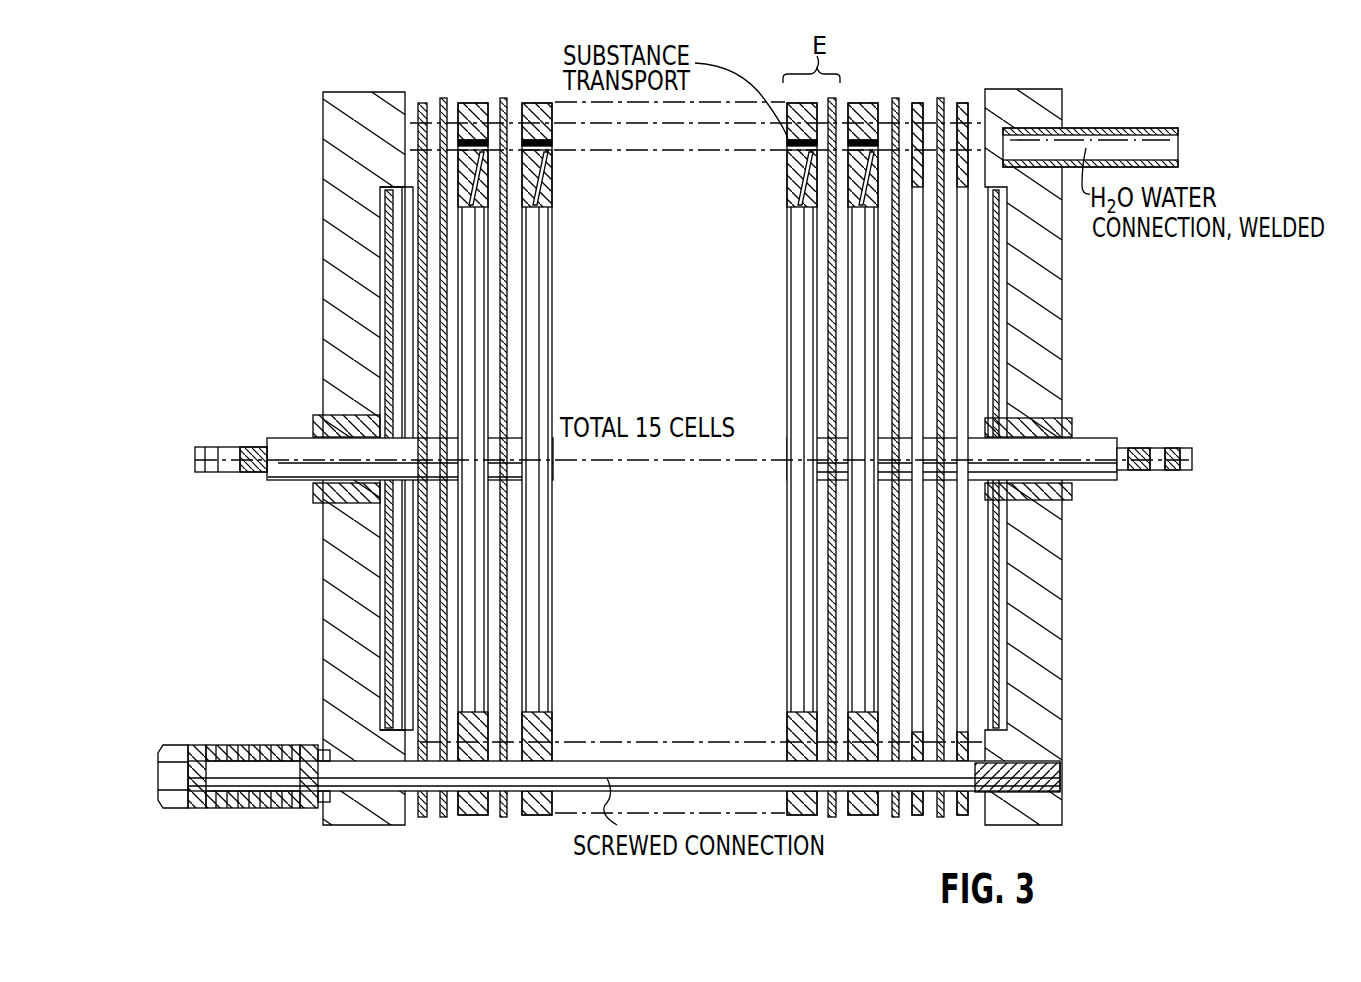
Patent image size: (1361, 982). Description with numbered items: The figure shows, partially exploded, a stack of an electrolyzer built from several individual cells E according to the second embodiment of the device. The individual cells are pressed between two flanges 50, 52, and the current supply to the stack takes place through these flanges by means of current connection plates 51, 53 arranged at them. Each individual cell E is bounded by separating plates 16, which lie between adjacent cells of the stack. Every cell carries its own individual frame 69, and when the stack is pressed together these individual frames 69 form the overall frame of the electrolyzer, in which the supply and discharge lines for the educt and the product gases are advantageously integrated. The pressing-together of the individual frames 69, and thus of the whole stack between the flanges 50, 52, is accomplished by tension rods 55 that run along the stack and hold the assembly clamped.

The flange 50 is at (340, 356).
The current connection plate 51 is at (405, 583).
The flange 52 is at (1065, 355).
The current connection plate 53 is at (975, 578).
The tension rod 55 is at (700, 770).
The individual frame 69 is at (790, 106).
The separating plate 16 is at (838, 108).